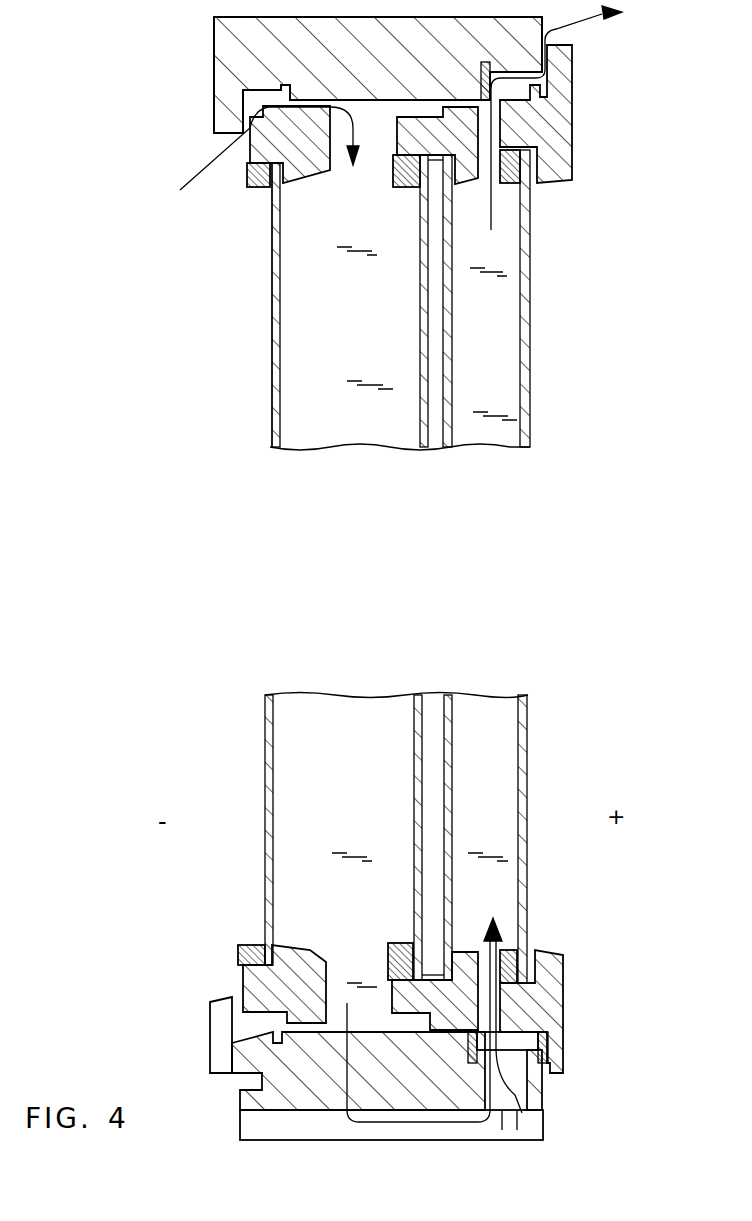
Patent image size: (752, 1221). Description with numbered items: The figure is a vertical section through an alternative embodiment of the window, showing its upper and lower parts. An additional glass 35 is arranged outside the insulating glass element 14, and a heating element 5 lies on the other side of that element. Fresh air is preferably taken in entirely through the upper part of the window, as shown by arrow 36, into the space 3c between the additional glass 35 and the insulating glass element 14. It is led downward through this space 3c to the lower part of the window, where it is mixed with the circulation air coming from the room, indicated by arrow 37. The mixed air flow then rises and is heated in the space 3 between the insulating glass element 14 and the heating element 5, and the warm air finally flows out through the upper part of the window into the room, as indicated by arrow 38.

The space 3 is at (507, 783).
The space 3c is at (303, 317).
The heating element 5 is at (532, 260).
The insulating glass element 14 is at (420, 267).
The additional glass 35 is at (270, 258).
The arrow 36 is at (203, 172).
The arrow 37 is at (572, 1130).
The arrow 38 is at (598, 28).